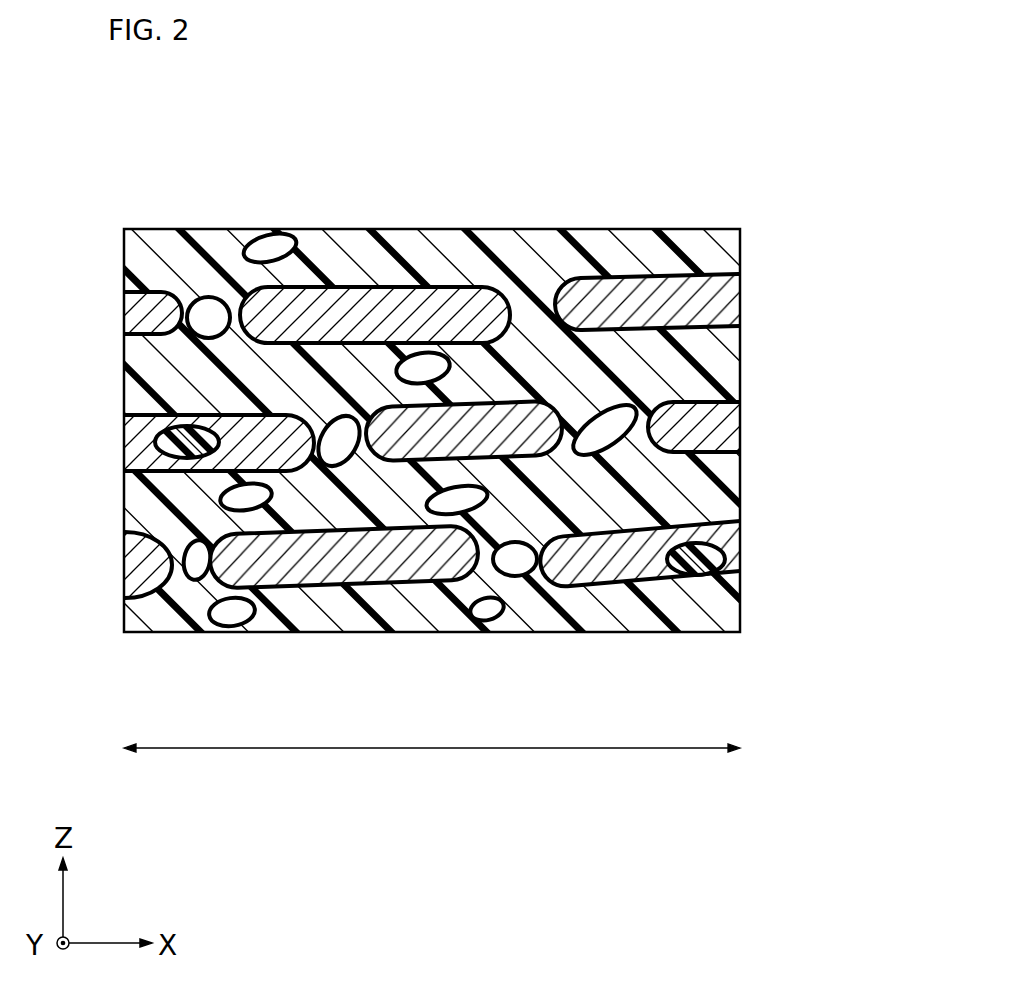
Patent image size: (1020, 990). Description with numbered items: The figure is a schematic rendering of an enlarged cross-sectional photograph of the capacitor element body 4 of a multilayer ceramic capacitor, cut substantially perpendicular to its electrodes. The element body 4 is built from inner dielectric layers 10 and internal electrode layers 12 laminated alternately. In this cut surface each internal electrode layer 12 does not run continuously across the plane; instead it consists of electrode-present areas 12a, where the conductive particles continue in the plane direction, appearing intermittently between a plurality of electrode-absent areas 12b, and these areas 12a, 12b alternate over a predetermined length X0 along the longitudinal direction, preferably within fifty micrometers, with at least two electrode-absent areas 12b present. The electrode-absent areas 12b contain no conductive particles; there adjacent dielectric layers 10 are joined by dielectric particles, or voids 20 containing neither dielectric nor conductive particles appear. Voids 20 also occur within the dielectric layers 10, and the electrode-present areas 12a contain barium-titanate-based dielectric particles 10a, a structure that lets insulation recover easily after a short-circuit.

The capacitor element body 4 is at (753, 207).
The inner dielectric layer 10 is at (352, 240).
The dielectric particle 10a is at (186, 448).
The internal electrode layer 12 is at (480, 290).
The electrode-present area 12a is at (425, 290).
The electrode-absent area 12b is at (233, 297).
The void 20 is at (200, 316).
The predetermined length X0 is at (680, 752).